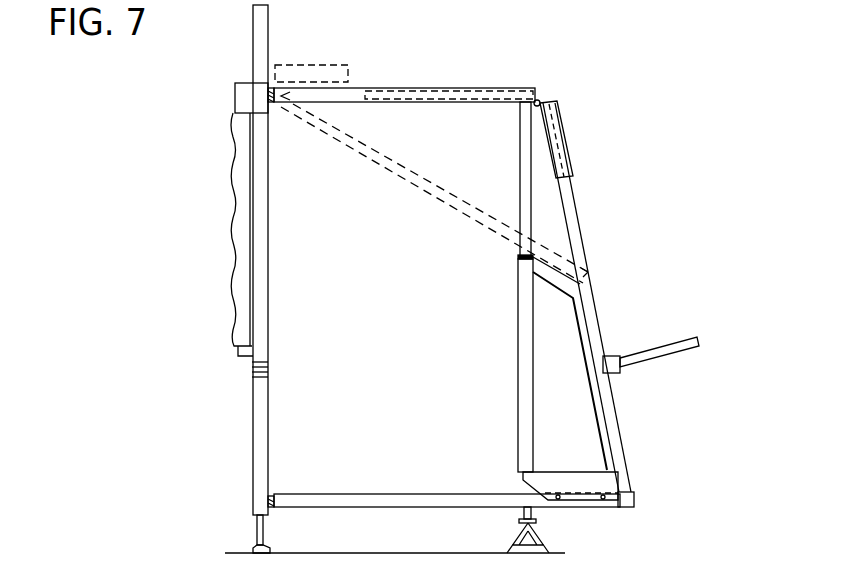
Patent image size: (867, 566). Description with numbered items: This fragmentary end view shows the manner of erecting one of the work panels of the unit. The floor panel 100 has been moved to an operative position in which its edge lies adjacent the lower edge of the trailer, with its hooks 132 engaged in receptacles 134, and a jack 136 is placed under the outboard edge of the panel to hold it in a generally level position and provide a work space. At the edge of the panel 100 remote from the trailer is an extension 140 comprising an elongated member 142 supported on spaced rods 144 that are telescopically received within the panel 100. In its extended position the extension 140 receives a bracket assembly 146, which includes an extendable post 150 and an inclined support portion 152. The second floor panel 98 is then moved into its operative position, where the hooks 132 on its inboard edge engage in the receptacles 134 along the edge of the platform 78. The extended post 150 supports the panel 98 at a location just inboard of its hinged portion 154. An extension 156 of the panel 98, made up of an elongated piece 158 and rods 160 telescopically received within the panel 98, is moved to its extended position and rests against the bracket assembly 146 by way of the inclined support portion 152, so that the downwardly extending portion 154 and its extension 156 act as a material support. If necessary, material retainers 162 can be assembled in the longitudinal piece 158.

The platform 78 is at (260, 108).
The floor panel 98 is at (362, 92).
The floor panel 100 is at (331, 506).
The hooks 132 is at (323, 266).
The receptacles 134 is at (269, 92).
The jack 136 is at (548, 540).
The extension 140 is at (656, 486).
The elongated member 142 is at (633, 506).
The rods 144 is at (583, 490).
The bracket assembly 146 is at (511, 346).
The extendable post 150 is at (519, 298).
The inclined support portion 152 is at (562, 288).
The hinged portion 154 is at (553, 127).
The extension 156 is at (629, 336).
The elongated piece 158 is at (616, 374).
The rods 160 is at (574, 216).
The material retainers 162 is at (680, 342).